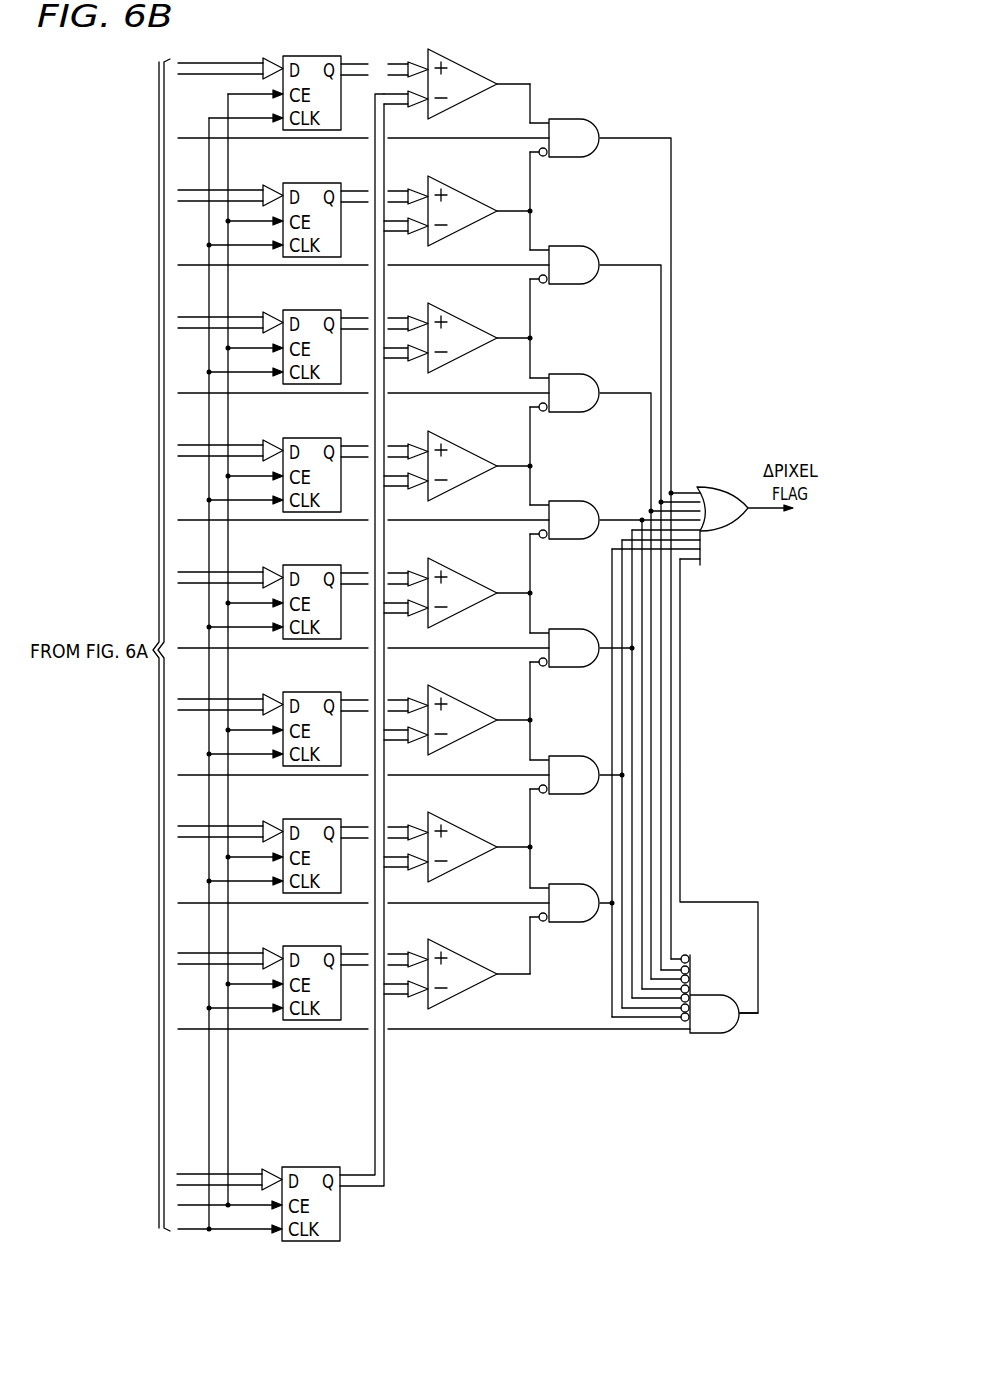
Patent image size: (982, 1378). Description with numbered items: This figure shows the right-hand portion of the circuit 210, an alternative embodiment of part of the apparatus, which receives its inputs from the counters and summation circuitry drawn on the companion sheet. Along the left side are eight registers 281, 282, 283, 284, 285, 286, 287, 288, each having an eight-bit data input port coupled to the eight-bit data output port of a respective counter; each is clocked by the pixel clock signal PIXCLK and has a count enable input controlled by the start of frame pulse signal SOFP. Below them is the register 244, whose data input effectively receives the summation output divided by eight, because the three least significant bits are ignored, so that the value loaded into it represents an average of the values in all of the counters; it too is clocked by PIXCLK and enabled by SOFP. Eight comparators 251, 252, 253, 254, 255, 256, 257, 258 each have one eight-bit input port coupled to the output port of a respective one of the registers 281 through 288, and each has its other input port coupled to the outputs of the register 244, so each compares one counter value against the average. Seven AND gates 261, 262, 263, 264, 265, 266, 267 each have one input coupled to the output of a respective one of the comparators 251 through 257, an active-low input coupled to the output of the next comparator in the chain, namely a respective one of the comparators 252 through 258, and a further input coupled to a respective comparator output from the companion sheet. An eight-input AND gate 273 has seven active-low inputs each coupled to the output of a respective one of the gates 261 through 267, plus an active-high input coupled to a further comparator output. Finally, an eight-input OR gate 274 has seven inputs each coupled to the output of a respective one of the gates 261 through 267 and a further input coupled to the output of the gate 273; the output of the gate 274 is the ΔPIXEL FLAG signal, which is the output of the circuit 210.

The circuit 210 is at (704, 66).
The register 244 is at (341, 1205).
The comparator 251 is at (458, 63).
The comparator 252 is at (458, 190).
The comparator 253 is at (458, 317).
The comparator 254 is at (458, 445).
The comparator 255 is at (458, 572).
The comparator 256 is at (458, 699).
The comparator 257 is at (458, 826).
The comparator 258 is at (458, 953).
The AND gate 261 is at (572, 119).
The AND gate 262 is at (572, 246).
The AND gate 263 is at (572, 374).
The AND gate 264 is at (572, 501).
The AND gate 265 is at (567, 667).
The AND gate 266 is at (567, 794).
The AND gate 267 is at (567, 922).
The eight-input AND gate 273 is at (713, 1034).
The eight-input OR gate 274 is at (722, 531).
The register 281 is at (292, 56).
The register 282 is at (292, 183).
The register 283 is at (292, 310).
The register 284 is at (292, 438).
The register 285 is at (292, 565).
The register 286 is at (292, 692).
The register 287 is at (292, 819).
The register 288 is at (292, 946).